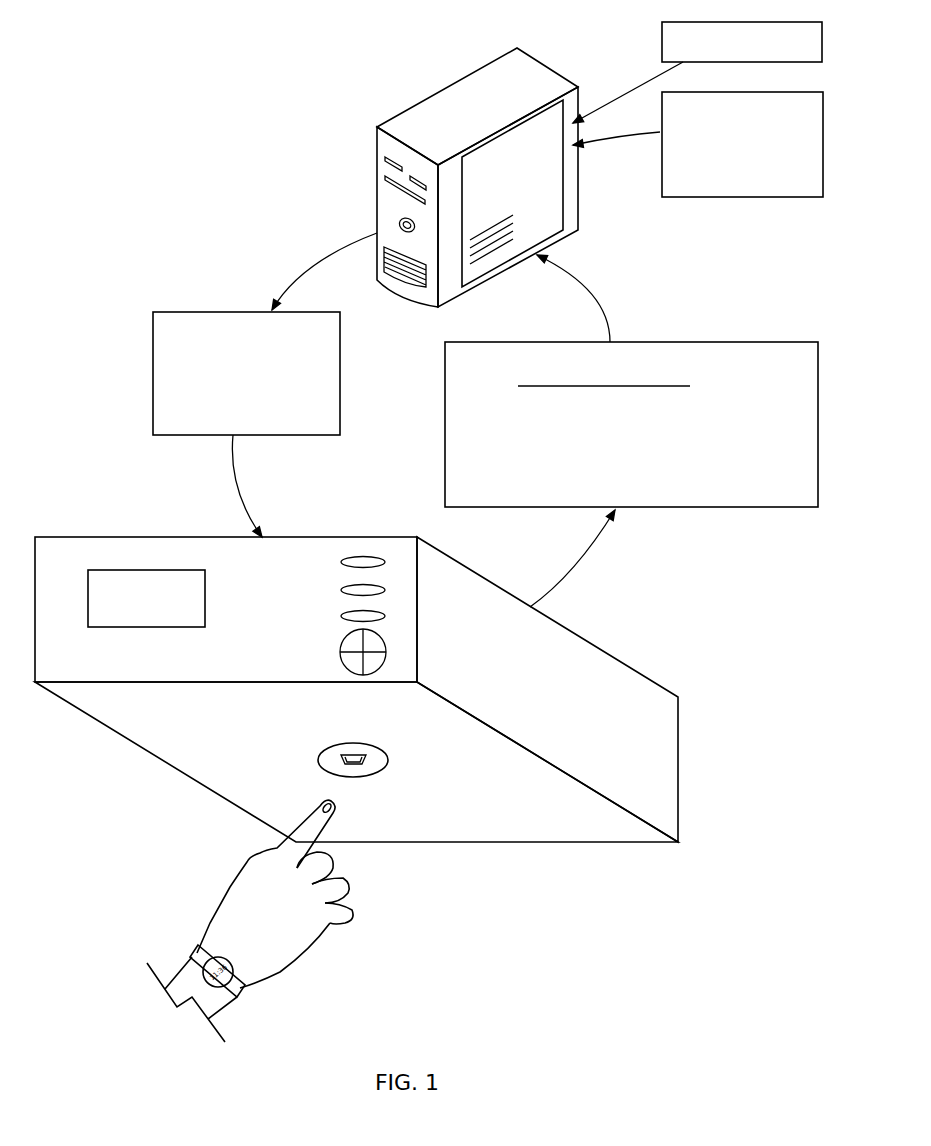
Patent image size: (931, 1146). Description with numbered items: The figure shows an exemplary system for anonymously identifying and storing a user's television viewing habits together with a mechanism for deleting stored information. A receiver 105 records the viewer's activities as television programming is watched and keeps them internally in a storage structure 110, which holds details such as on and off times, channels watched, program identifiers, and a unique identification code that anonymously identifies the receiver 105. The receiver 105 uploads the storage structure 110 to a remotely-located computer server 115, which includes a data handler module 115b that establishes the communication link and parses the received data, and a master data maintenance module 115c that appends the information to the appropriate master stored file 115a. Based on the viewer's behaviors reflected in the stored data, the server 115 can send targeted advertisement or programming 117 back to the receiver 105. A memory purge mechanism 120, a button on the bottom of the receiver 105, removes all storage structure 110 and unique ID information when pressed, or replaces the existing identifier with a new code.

The receiver 105 is at (160, 760).
The storage structure 110 is at (718, 510).
The computer server 115 is at (578, 180).
The master stored file 115a is at (563, 198).
The data handler module 115b is at (662, 27).
The master data maintenance module 115c is at (783, 192).
The targeted advertisement or programming 117 is at (340, 372).
The memory purge mechanism 120 is at (358, 753).